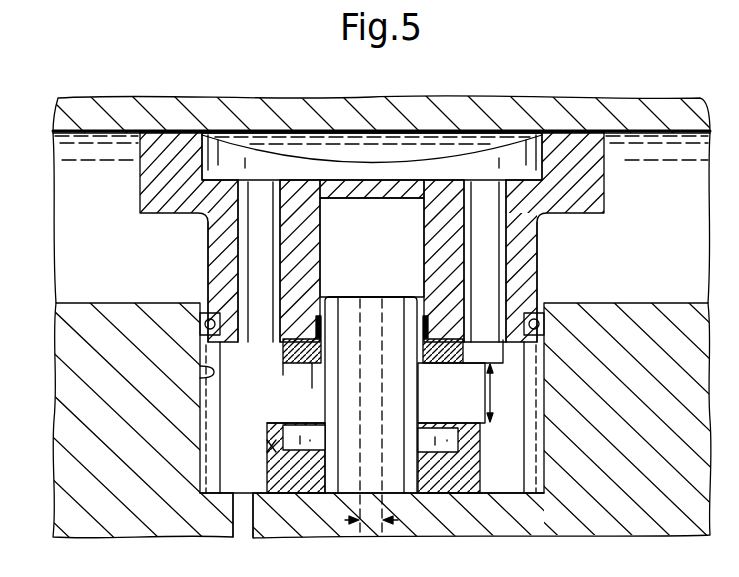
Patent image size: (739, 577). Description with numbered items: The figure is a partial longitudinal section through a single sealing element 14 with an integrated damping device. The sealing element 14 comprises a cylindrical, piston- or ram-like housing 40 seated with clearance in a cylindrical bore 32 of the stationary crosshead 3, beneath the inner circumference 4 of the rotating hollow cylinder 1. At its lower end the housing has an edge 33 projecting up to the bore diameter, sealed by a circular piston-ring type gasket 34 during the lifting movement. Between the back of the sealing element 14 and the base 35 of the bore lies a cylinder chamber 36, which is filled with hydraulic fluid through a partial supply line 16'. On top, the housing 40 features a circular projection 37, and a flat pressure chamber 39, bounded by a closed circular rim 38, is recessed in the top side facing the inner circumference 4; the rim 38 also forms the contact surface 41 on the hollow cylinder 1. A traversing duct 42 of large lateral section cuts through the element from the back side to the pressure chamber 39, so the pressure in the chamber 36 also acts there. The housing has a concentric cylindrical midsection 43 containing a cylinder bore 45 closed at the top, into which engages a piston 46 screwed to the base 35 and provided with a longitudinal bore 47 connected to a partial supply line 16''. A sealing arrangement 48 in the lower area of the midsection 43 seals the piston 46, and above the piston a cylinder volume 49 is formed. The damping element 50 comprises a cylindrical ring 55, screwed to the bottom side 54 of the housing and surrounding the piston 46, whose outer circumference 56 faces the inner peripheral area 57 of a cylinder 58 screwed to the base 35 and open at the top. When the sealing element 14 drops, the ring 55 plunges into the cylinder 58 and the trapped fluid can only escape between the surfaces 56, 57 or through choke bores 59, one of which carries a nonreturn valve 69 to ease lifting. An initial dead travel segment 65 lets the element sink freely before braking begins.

The hollow cylinder 1 is at (98, 108).
The crosshead 3 is at (72, 370).
The inner circumference 4 is at (88, 156).
The sealing element 14 is at (178, 249).
The partial supply line 16' is at (201, 515).
The partial supply line 16'' is at (400, 419).
The cylindrical bore 32 is at (200, 372).
The edge 33 is at (207, 292).
The piston ring type gasket 34 is at (200, 323).
The base 35 is at (498, 485).
The cylinder chamber 36 is at (513, 468).
The circular projection 37 is at (157, 193).
The circular rim 38 is at (548, 137).
The pressure chamber 39 is at (300, 150).
The housing 40 is at (547, 288).
The contact surface 41 is at (548, 135).
The traversing duct 42 is at (240, 237).
The cylindrical midsection 43 is at (453, 302).
The cylinder bore 45 is at (420, 227).
The piston 46 is at (415, 413).
The longitudinal bore 47 is at (378, 373).
The sealing arrangement 48 is at (482, 338).
The cylinder volume 49 is at (385, 277).
The damping element 50 is at (280, 406).
The bottom side 54 is at (272, 343).
The cylindrical ring 55 is at (308, 389).
The outer circumference 56 is at (276, 345).
The inner peripheral area 57 is at (295, 428).
The cylinder 58 is at (265, 477).
The choke bore 59 is at (463, 455).
The dead travel segment 65 is at (492, 397).
The nonreturn valve 69 is at (263, 437).